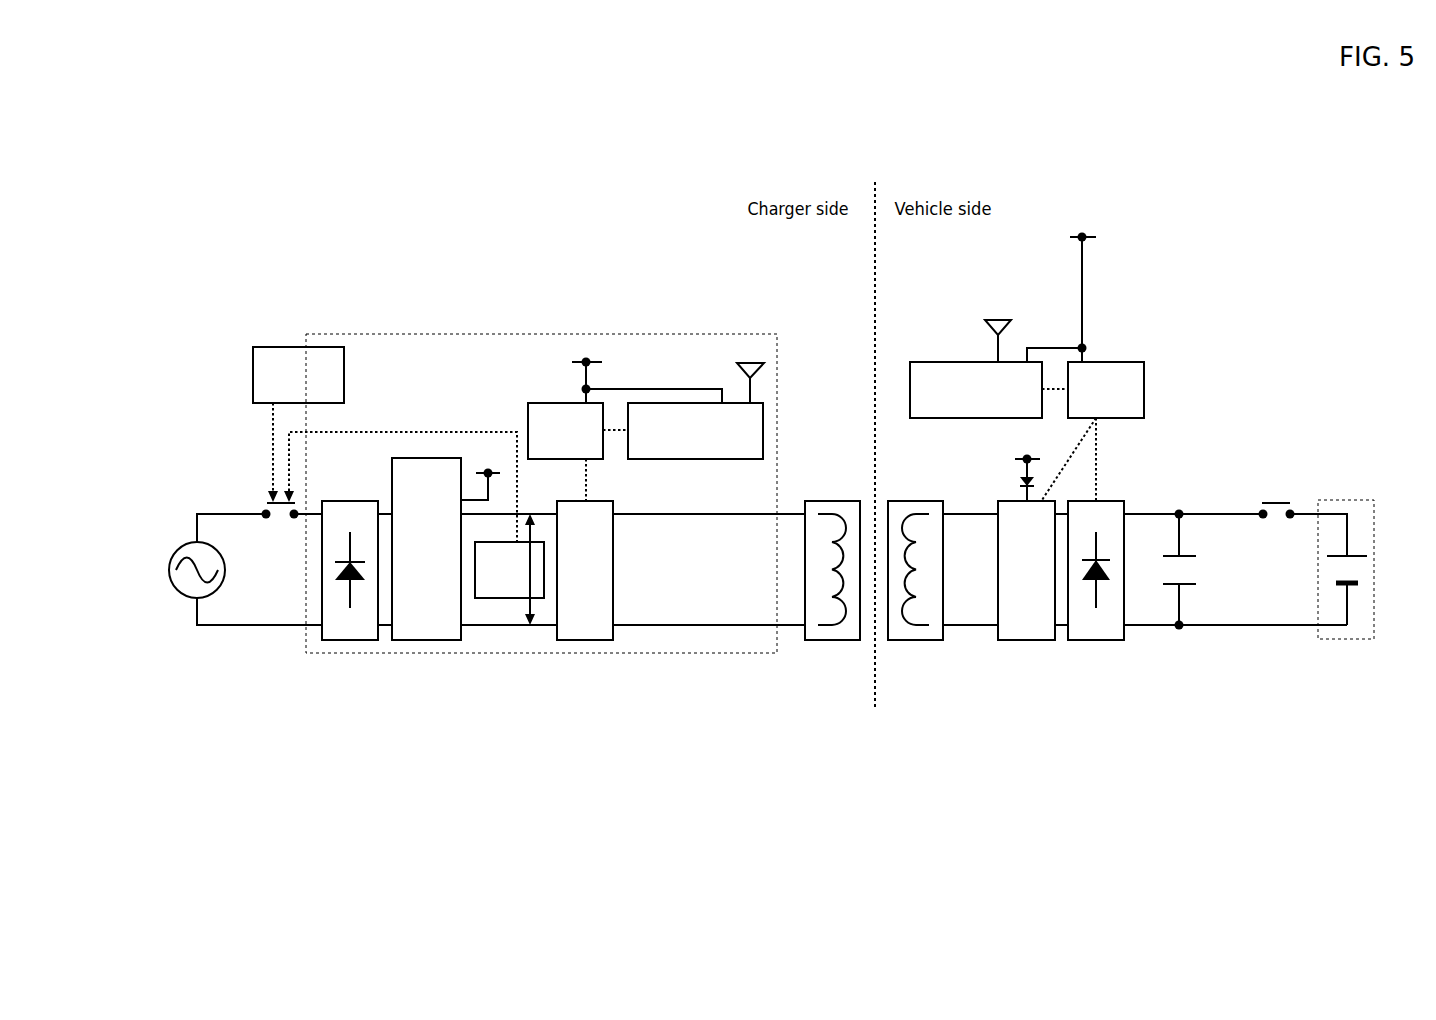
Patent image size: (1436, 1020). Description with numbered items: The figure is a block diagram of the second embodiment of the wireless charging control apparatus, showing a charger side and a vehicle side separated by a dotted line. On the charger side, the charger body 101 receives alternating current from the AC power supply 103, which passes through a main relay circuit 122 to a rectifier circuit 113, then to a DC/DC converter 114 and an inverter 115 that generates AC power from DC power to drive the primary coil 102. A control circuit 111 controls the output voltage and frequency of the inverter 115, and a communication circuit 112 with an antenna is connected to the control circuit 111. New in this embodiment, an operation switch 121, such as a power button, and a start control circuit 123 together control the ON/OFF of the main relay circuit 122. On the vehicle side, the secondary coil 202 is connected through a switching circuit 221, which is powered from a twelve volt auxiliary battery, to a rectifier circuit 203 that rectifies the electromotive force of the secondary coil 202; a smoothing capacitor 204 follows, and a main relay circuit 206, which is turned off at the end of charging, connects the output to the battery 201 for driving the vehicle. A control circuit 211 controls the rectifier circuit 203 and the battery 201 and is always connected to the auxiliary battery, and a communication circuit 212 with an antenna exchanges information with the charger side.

The charger body 101 is at (448, 333).
The primary coil 102 is at (831, 500).
The AC power supply 103 is at (183, 548).
The control circuit 111 is at (575, 402).
The communication circuit 112 is at (766, 415).
The rectifier circuit 113 is at (350, 643).
The DC/DC converter 114 is at (433, 643).
The inverter 115 is at (604, 501).
The operation switch 121 is at (346, 372).
The main relay circuit 122 is at (286, 529).
The start control circuit 123 is at (503, 600).
The battery 201 is at (1345, 498).
The secondary coil 202 is at (916, 500).
The rectifier circuit 203 is at (1094, 643).
The smoothing capacitor 204 is at (1197, 595).
The main relay circuit 206 is at (1277, 500).
The control circuit 211 is at (1146, 372).
The communication circuit 212 is at (945, 361).
The switching circuit 221 is at (1027, 643).